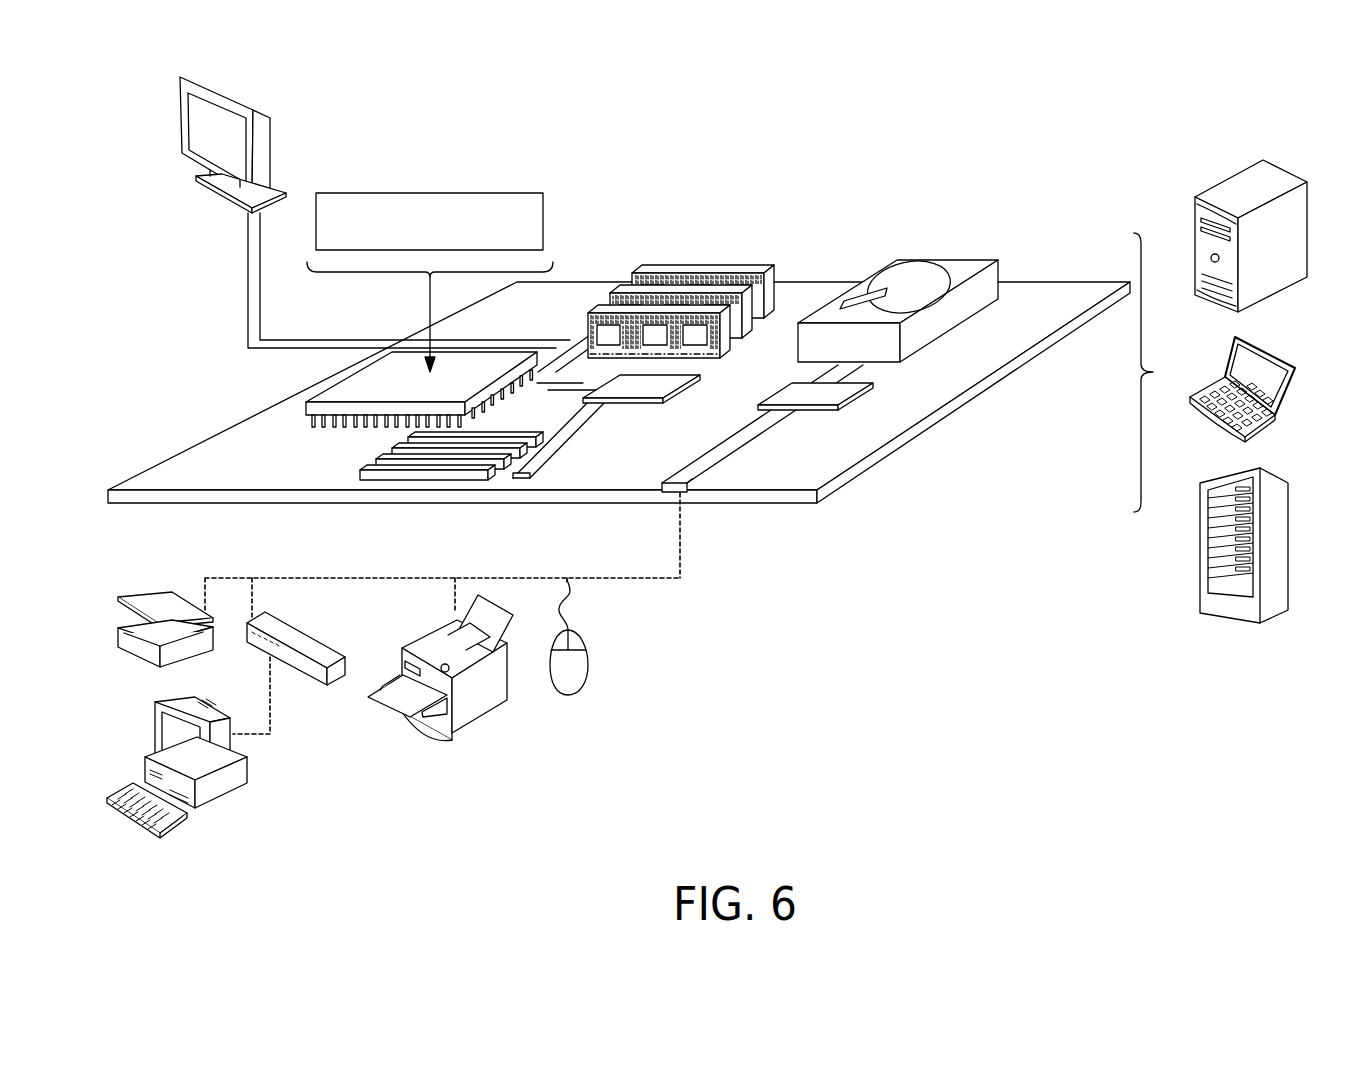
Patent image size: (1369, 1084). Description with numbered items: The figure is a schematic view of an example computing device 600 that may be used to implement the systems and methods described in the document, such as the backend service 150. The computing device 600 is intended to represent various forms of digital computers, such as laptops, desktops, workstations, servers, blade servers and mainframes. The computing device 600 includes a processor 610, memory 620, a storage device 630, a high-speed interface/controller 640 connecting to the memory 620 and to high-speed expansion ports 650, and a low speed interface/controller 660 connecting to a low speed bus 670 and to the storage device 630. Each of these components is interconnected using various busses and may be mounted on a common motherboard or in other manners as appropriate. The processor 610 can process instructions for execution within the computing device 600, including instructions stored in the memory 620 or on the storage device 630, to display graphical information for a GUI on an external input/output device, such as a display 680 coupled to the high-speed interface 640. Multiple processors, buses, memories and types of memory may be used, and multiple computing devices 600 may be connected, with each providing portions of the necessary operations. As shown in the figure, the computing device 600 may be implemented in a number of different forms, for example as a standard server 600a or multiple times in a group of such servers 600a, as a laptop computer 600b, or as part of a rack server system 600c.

The computing device 600 is at (773, 145).
The standard server 600a is at (1223, 175).
The laptop computer 600b is at (1278, 355).
The rack server system 600c is at (1282, 528).
The processor 610 is at (303, 402).
The memory 620 is at (697, 273).
The storage device 630 is at (943, 258).
The high-speed interface/controller 640 is at (647, 404).
The high-speed expansion ports 650 is at (360, 470).
The low speed interface/controller 660 is at (805, 388).
The low speed bus 670 is at (687, 493).
The display 680 is at (180, 125).
The backend service 150 is at (430, 193).